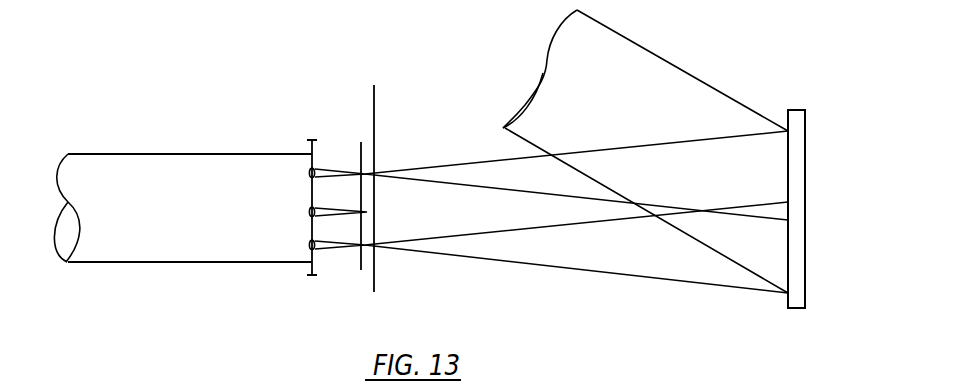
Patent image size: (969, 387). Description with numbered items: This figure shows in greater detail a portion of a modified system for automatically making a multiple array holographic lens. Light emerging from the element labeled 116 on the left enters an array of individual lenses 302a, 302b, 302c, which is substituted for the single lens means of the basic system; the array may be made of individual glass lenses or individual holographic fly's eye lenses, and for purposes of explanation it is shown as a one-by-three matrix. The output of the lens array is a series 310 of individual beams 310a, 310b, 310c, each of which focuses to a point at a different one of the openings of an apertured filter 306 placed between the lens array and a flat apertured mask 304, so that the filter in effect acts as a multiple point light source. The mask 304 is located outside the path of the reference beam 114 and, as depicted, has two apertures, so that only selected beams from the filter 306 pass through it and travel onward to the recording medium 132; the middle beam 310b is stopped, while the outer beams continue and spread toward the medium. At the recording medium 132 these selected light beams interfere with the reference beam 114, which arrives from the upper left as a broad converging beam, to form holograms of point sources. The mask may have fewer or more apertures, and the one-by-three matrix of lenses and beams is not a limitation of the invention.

The light source housing 116 is at (137, 162).
The individual lens 302a is at (306, 172).
The individual lens 302b is at (306, 212).
The individual lens 302c is at (306, 245).
The flat apertured mask 304 is at (378, 103).
The apertured filter 306 is at (358, 272).
The series of individual beams 310 is at (338, 142).
The individual beam 310a is at (345, 164).
The individual beam 310b is at (345, 198).
The individual beam 310c is at (322, 257).
The reference beam 114 is at (623, 50).
The recording medium 132 is at (805, 125).